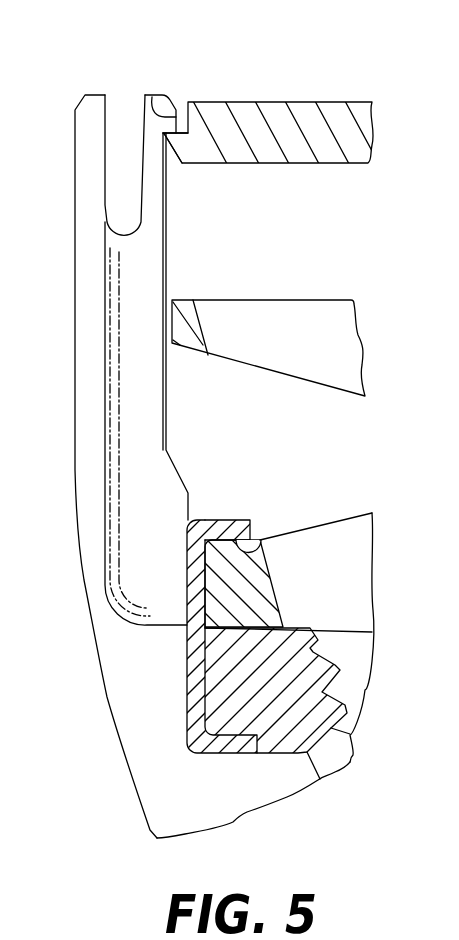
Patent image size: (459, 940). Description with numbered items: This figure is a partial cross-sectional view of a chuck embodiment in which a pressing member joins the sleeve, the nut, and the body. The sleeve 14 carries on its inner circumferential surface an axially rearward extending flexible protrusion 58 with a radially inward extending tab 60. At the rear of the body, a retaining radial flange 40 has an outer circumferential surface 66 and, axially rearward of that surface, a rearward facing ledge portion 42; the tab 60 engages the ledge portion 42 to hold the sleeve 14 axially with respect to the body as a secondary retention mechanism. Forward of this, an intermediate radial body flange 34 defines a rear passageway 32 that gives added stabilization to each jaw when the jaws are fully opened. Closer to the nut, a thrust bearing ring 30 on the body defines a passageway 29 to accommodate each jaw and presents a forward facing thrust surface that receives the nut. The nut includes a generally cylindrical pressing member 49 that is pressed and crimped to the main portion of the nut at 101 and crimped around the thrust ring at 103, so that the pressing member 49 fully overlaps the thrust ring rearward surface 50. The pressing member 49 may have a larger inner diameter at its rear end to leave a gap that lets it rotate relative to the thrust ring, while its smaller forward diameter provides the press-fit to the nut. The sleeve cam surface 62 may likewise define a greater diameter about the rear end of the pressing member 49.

The sleeve 14 is at (93, 93).
The tab 60 is at (160, 97).
The ledge portion 42 is at (179, 143).
The radial flange 40 is at (318, 101).
The outer circumferential surface 66 is at (165, 140).
The flexible protrusion 58 is at (165, 199).
The rear passageway 32 is at (280, 300).
The intermediate radial body flange 34 is at (200, 328).
The sleeve cam surface 62 is at (187, 565).
The crimp location around thrust ring 103 is at (249, 519).
The press and crimp location to nut 101 is at (237, 740).
The thrust ring rearward surface 50 is at (264, 540).
The passageway 29 is at (347, 515).
The thrust bearing ring 30 is at (273, 578).
The pressing member 49 is at (313, 651).